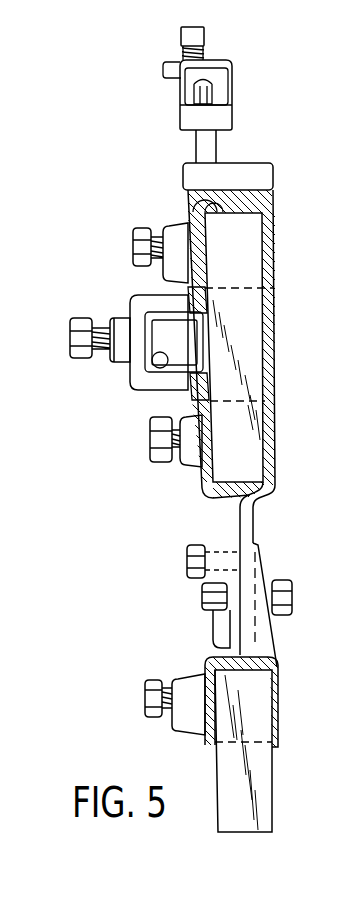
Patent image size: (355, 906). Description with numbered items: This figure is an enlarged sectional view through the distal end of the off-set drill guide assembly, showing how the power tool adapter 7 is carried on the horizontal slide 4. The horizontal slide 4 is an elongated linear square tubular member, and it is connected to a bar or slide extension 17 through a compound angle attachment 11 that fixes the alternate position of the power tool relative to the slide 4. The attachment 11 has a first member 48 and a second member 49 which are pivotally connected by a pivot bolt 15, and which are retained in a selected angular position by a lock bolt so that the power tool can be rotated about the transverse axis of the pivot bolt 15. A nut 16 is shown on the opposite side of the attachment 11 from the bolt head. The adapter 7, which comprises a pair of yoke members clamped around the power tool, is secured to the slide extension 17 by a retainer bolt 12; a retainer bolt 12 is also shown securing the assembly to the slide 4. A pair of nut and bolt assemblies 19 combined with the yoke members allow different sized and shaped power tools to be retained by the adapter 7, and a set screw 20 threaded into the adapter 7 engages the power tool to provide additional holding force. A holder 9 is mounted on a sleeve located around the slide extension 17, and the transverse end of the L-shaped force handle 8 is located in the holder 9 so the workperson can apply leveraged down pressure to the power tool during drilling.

The horizontal slide 4 is at (255, 787).
The power tool adapter 7 is at (218, 117).
The L-shaped force handle 8 is at (157, 360).
The holder 9 is at (125, 323).
The compound angle attachment 11 is at (260, 629).
The retainer bolt 12 is at (145, 253).
The pivot bolt 15 is at (188, 560).
The nut 16 is at (293, 593).
The slide extension 17 is at (250, 322).
The nut and bolt assemblies 19 is at (200, 155).
The set screw 20 is at (180, 34).
The first member 48 is at (258, 578).
The second member 49 is at (200, 450).